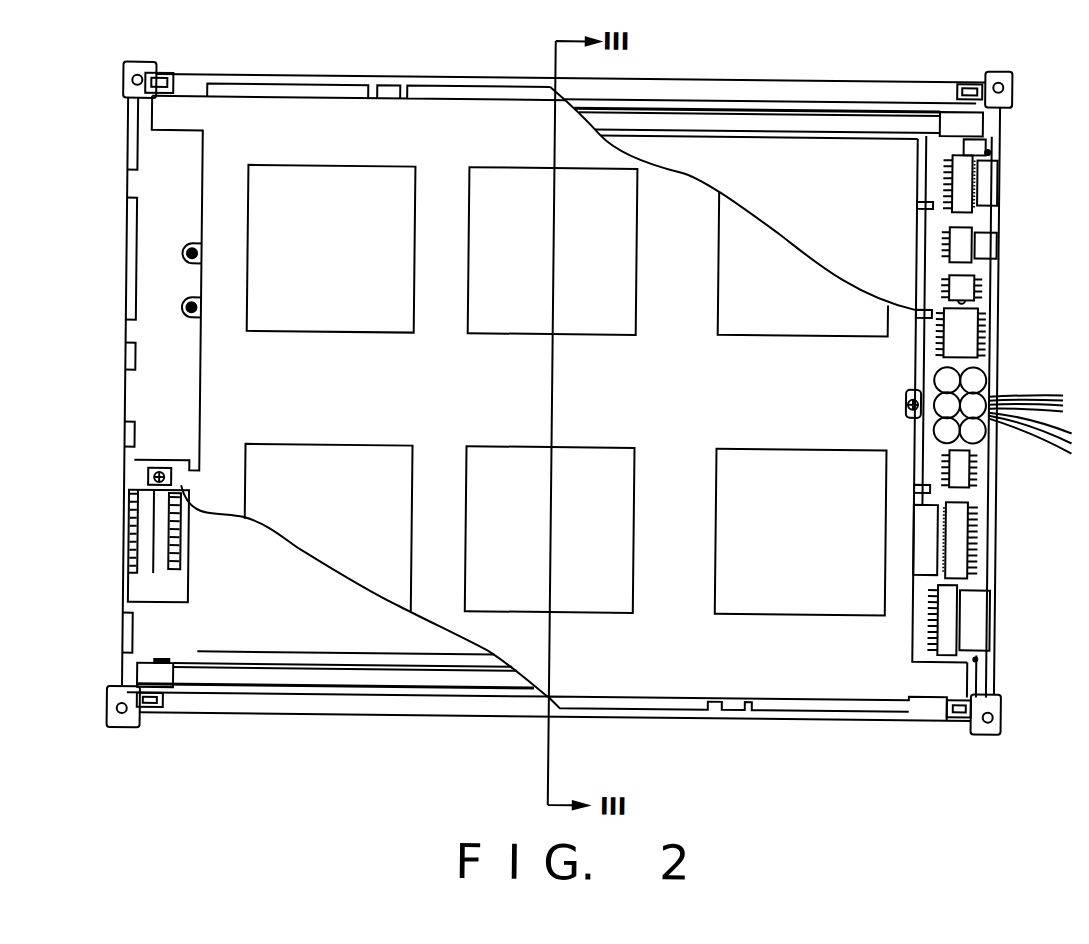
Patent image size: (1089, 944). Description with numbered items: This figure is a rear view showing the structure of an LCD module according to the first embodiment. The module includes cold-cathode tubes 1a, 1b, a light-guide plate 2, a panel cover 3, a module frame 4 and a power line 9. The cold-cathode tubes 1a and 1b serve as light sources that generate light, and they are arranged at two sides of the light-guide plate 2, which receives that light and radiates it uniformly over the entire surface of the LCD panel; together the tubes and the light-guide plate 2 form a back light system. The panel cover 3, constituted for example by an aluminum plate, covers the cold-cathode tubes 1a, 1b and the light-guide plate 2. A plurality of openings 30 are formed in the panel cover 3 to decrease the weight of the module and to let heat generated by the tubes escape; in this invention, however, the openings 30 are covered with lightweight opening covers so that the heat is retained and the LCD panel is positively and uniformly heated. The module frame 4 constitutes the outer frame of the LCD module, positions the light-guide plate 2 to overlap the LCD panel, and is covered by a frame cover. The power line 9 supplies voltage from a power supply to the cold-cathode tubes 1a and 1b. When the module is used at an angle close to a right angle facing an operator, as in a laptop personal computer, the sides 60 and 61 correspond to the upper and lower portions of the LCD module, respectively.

The cold-cathode tube 1a is at (298, 676).
The cold-cathode tube 1b is at (919, 123).
The light-guide plate 2 is at (413, 658).
The panel cover 3 is at (771, 663).
The module frame 4 is at (148, 641).
The power line 9 is at (1037, 428).
The openings 30 is at (808, 627).
The side 60 is at (829, 84).
The side 61 is at (906, 718).